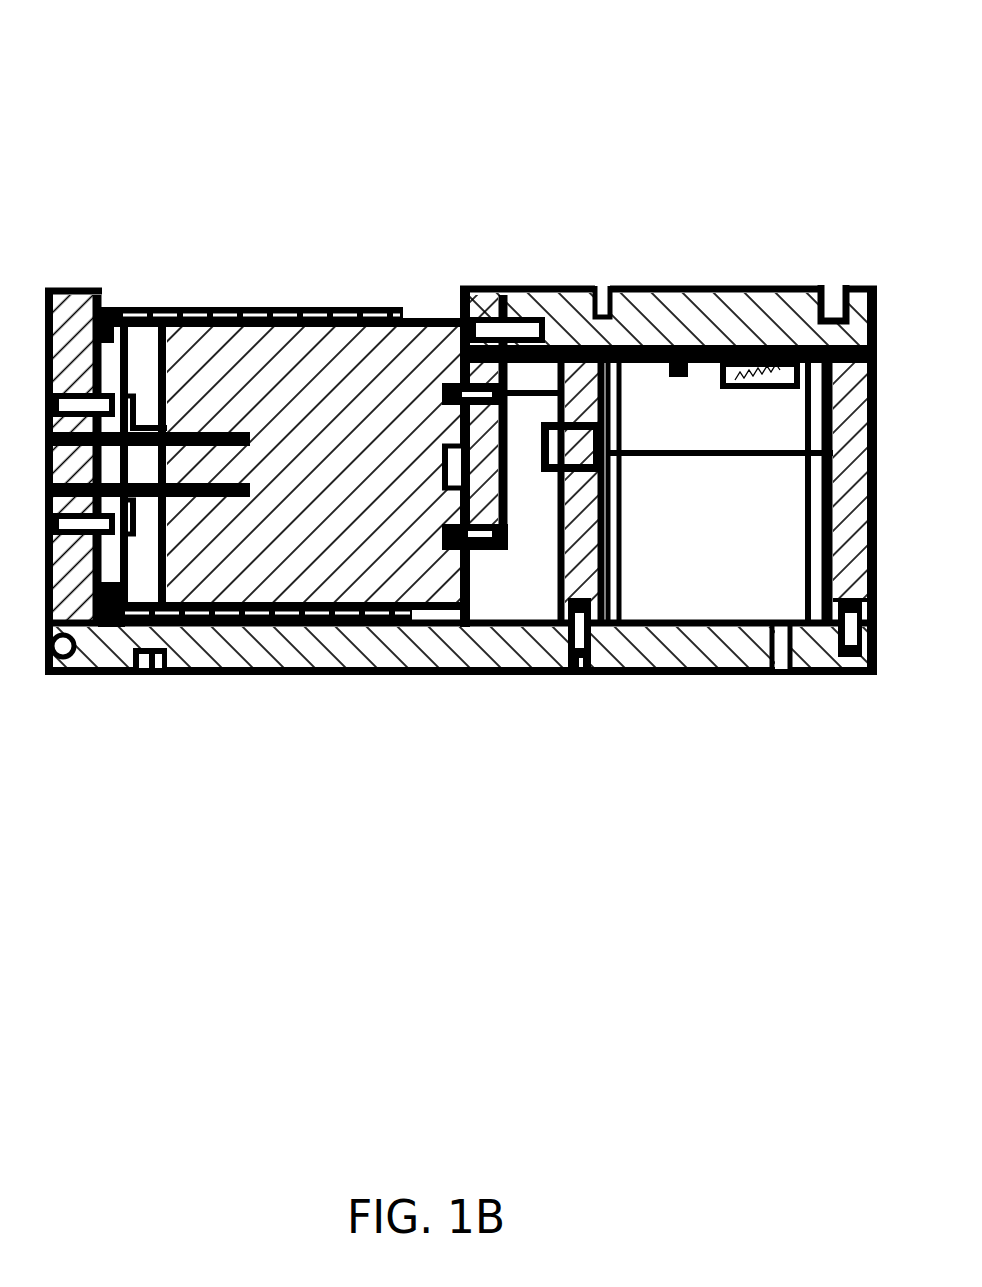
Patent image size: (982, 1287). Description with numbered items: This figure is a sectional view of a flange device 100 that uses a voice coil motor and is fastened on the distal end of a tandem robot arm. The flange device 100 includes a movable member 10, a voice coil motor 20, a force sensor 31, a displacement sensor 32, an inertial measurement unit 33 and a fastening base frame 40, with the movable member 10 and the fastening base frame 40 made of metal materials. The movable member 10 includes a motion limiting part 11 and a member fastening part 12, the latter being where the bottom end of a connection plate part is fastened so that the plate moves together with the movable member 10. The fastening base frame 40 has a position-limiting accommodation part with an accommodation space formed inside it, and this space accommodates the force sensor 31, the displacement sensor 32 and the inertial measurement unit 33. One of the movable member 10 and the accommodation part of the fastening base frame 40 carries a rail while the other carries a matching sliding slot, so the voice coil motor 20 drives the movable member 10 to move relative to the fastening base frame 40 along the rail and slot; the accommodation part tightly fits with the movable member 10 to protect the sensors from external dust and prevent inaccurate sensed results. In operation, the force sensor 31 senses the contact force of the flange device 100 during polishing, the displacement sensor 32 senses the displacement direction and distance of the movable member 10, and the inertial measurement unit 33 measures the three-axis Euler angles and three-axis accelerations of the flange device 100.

The flange device 100 is at (356, 165).
The movable member 10 is at (632, 180).
The motion limiting part 11 is at (488, 437).
The member fastening part 12 is at (657, 308).
The voice coil motor 20 is at (275, 352).
The force sensor 31 is at (753, 347).
The displacement sensor 32 is at (678, 431).
The inertial measurement unit 33 is at (712, 577).
The fastening base frame 40 is at (262, 642).